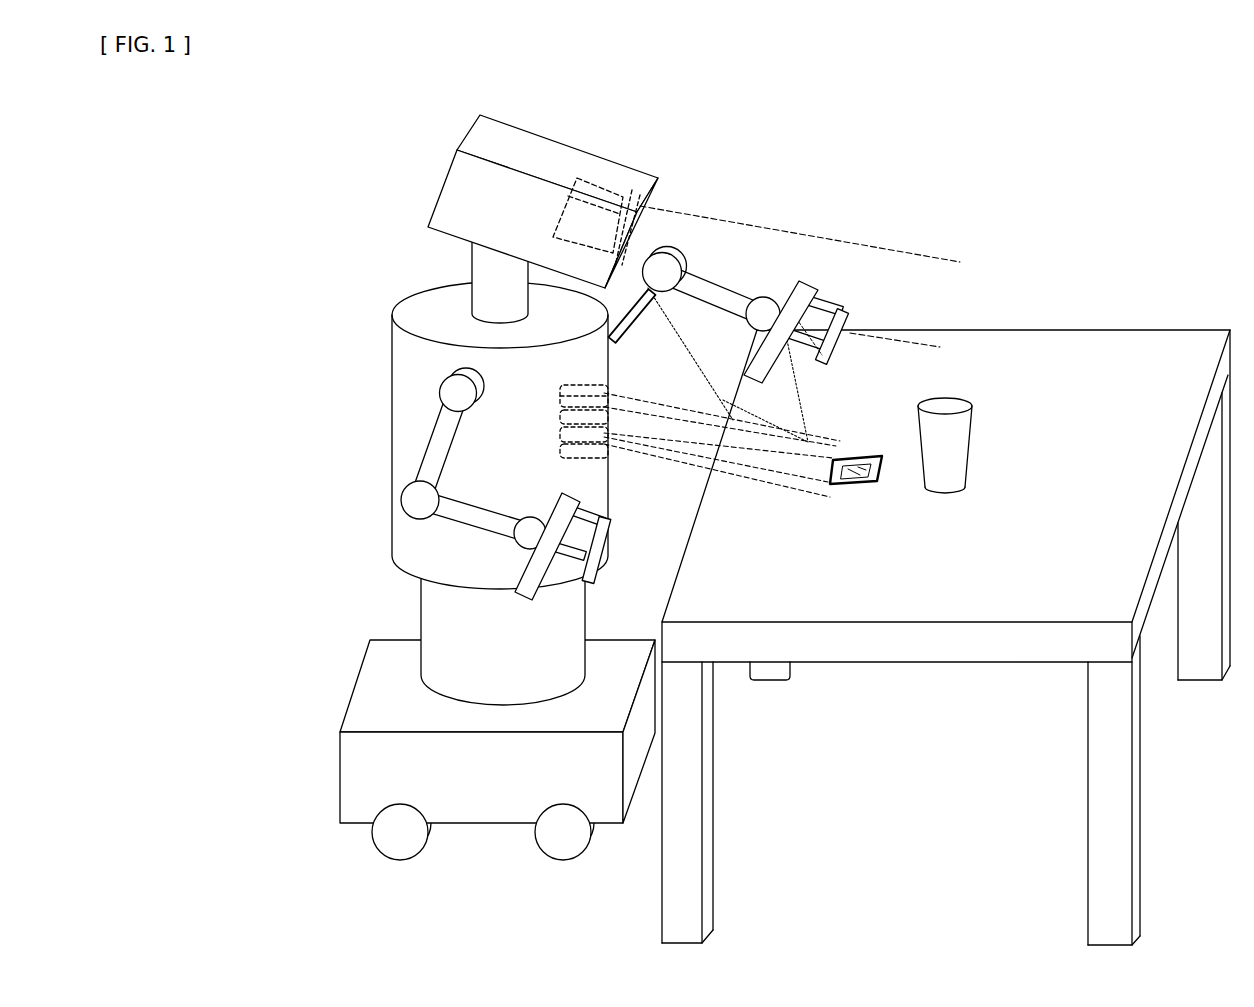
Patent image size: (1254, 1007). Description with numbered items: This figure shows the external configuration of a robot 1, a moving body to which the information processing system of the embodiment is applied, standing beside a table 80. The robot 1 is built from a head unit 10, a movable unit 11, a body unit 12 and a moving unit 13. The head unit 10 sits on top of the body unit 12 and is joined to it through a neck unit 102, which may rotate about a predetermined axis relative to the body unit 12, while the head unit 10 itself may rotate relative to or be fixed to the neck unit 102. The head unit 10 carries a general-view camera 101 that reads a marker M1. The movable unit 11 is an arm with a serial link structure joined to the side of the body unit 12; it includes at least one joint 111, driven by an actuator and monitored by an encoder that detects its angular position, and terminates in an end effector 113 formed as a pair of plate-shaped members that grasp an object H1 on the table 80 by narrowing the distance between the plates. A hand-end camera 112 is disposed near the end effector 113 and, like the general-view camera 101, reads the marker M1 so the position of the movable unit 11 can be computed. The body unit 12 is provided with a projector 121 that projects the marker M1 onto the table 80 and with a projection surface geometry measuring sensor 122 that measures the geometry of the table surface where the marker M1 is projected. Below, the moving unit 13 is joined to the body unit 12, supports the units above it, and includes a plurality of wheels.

The robot 1 is at (619, 505).
The head unit 10 is at (551, 188).
The general-view camera 101 is at (630, 188).
The neck unit 102 is at (473, 262).
The movable unit 11 is at (768, 279).
The joint 111 is at (669, 250).
The hand-end camera 112 is at (826, 302).
The end effector 113 is at (842, 304).
The body unit 12 is at (581, 428).
The projector 121 is at (598, 462).
The projection surface geometry measuring sensor 122 is at (592, 380).
The moving unit 13 is at (476, 748).
The table 80 is at (1174, 330).
The marker M1 is at (848, 485).
The object H1 is at (948, 493).